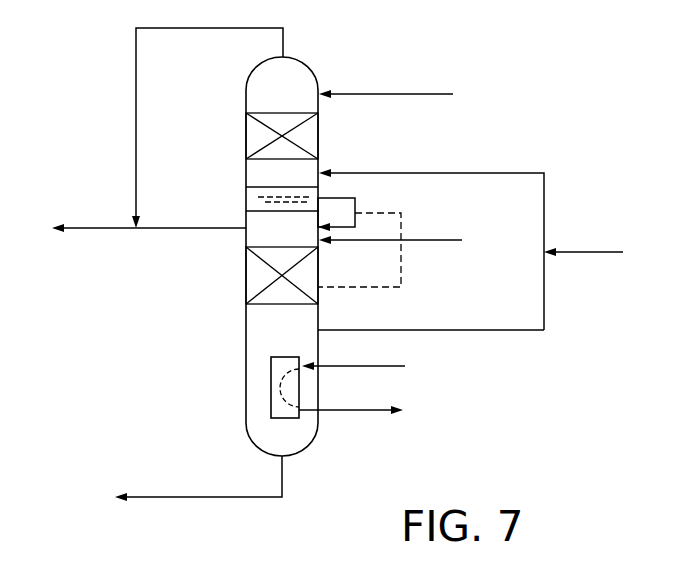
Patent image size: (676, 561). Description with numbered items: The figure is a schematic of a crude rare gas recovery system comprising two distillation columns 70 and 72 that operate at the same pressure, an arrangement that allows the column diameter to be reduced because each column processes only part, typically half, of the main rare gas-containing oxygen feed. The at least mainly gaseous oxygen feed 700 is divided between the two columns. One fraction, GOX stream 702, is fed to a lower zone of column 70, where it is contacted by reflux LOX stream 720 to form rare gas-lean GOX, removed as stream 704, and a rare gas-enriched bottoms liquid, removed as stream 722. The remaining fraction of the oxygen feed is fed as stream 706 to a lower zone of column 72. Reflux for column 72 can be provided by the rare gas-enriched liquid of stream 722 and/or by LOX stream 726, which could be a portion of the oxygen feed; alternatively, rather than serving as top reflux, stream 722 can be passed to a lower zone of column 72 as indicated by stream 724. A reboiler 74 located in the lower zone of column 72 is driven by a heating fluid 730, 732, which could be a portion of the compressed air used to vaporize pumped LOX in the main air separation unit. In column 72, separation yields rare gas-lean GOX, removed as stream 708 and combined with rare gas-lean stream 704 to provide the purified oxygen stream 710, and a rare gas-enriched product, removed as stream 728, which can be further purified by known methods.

The column 70 is at (246, 136).
The column 72 is at (246, 345).
The reboiler 74 is at (271, 395).
The at least mainly gaseous oxygen feed 700 is at (580, 252).
The GOX stream 702 is at (438, 173).
The rare gas-lean GOX stream 704 is at (136, 72).
The oxygen feed stream 706 is at (462, 330).
The rare gas-lean GOX stream 708 is at (222, 228).
The purified oxygen stream 710 is at (83, 228).
The reflux LOX stream 720 is at (370, 94).
The rare gas-enriched bottoms liquid stream 722 is at (360, 198).
The stream 724 is at (401, 268).
The LOX stream 726 is at (430, 240).
The rare gas-enriched product stream 728 is at (235, 497).
The heating fluid 730 is at (358, 366).
The heating fluid 732 is at (345, 410).